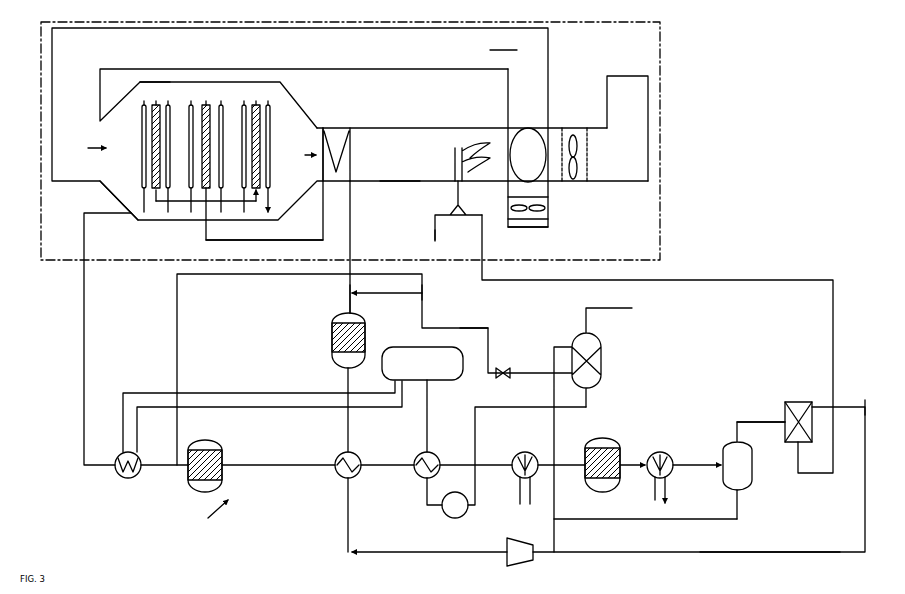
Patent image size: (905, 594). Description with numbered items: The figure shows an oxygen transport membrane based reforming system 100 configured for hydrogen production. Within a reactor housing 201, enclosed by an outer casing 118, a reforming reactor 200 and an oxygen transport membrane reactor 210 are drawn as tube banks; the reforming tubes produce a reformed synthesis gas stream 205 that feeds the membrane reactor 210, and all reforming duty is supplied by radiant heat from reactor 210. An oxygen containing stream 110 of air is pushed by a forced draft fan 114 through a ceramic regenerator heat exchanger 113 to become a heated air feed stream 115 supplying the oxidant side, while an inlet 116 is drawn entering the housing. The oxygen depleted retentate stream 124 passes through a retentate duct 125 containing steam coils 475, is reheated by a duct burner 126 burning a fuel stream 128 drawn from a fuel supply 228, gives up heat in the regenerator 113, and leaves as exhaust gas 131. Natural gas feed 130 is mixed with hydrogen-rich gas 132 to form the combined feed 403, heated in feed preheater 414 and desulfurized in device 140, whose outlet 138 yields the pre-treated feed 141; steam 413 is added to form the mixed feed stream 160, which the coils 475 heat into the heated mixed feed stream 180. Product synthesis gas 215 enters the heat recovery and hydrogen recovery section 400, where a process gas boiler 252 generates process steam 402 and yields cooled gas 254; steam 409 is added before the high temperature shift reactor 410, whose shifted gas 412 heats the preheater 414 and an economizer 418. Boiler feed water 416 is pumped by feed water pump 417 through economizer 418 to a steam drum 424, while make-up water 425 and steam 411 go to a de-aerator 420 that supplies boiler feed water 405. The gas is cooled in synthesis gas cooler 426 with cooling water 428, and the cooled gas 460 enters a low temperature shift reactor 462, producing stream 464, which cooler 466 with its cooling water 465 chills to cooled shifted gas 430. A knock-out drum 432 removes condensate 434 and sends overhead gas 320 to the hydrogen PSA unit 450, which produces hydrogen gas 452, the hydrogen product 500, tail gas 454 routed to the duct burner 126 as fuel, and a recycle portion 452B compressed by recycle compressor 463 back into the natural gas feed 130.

The oxygen transport membrane based reforming system 100 is at (41, 115).
The boiler casing / flue gas duct 118 is at (343, 28).
The reforming reactor 200 is at (211, 113).
The reformed synthesis gas stream 205 is at (155, 82).
The reactor housing 201 is at (107, 200).
The oxygen transport membrane reactor 210 is at (142, 121).
The fuel inlet 116 is at (85, 148).
The oxygen depleted retentate stream 124 is at (299, 155).
The steam coils 475 is at (337, 128).
The retentate duct 125 is at (400, 181).
The mixed feed stream 160 is at (350, 202).
The heated mixed feed stream 180 is at (257, 240).
The duct burner 126 is at (455, 142).
The fuel stream 128 is at (456, 195).
The fuel supply 228 is at (435, 242).
The heat exchanger 113 is at (528, 155).
The forced draft fan 114 is at (548, 208).
The oxygen containing stream 110 is at (528, 227).
The exhaust gas 131 is at (627, 76).
The heated air feed stream 115 is at (528, 83).
The synthesis gas stream 215 is at (84, 275).
The steam 409 is at (177, 347).
The process steam 402 is at (422, 307).
The pre-treated natural gas and hydrogen feed stream 141 is at (335, 299).
The steam 413 is at (399, 299).
The steam 411 is at (475, 328).
The sulfur removal device 140 is at (332, 353).
The vessel outlet 138 is at (348, 380).
The steam drum 424 is at (293, 399).
The boiler feed water 405 is at (488, 407).
The de-aerator 420 is at (601, 359).
The make-up water stream 425 is at (639, 532).
The process gas boiler 252 is at (116, 462).
The initially cooled synthesis gas product stream 254 is at (155, 465).
The high temperature shift reactor 410 is at (205, 440).
The shifted synthesis gas stream 412 is at (242, 465).
The heat recovery and hydrogen recovery section 400 is at (209, 517).
The feed preheater 414 is at (337, 460).
The combined hydrocarbon feed stream 403 is at (348, 538).
The hydrocarbon containing feed stream 130 is at (347, 552).
The hydrogen-rich gas 132 is at (387, 552).
The economizer 418 is at (416, 460).
The boiler feed water stream 416 is at (427, 492).
The feed water pump 417 is at (455, 518).
The synthesis gas cooler 426 is at (525, 452).
The cooling water 428 is at (520, 498).
The cooled synthesis gas 460 is at (585, 452).
The low temperature shift reactor 462 is at (602, 438).
The synthesis gas stream 464 is at (633, 465).
The synthesis gas cooler 466 is at (660, 452).
The cooling water 465 is at (653, 495).
The cooled shifted synthesis gas stream 430 is at (698, 465).
The knock-out drum 432 is at (754, 456).
The condensate stream 434 is at (737, 507).
The cooled shifted synthesis gas 320 is at (758, 422).
The hydrogen pressure swing adsorption unit 450 is at (798, 402).
The tail gas 454 is at (657, 354).
The hydrogen gas stream 452 is at (852, 407).
The hydrogen product 500 is at (865, 407).
The hydrogen gas 452B is at (777, 552).
The compressor 463 is at (520, 552).